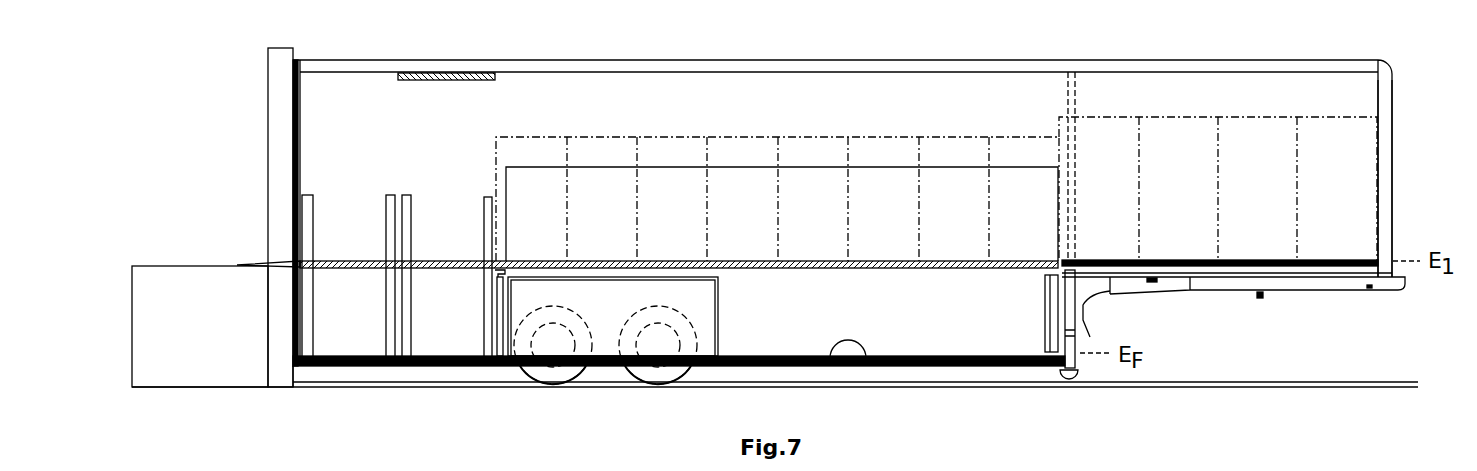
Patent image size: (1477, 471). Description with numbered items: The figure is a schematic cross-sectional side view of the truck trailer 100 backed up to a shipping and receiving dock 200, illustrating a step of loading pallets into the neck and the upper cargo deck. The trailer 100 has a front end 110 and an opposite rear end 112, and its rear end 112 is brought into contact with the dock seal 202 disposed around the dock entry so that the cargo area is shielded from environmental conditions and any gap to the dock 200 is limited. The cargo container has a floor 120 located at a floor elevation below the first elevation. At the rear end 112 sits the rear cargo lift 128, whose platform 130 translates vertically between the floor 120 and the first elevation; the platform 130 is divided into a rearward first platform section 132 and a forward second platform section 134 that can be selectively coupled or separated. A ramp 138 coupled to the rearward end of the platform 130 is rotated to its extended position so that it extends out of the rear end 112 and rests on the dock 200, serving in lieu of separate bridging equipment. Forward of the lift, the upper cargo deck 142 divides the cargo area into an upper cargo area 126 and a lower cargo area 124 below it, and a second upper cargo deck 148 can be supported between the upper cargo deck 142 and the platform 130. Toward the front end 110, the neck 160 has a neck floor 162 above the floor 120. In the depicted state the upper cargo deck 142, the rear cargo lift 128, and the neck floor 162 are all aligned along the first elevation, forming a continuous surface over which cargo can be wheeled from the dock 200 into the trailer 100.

The truck trailer 100 is at (940, 47).
The front end 110 is at (1392, 68).
The rear end 112 is at (296, 60).
The floor 120 is at (875, 367).
The lower cargo area 124 is at (895, 322).
The upper cargo area 126 is at (878, 108).
The rear cargo lift 128 is at (333, 240).
The platform 130 is at (366, 261).
The first platform section 132 is at (358, 261).
The second platform section 134 is at (447, 261).
The ramp 138 is at (238, 264).
The upper cargo deck 142 is at (797, 261).
The second upper cargo deck 148 is at (480, 73).
The neck 160 is at (1292, 272).
The neck floor 162 is at (1338, 261).
The shipping and receiving dock 200 is at (150, 265).
The dock seal 202 is at (283, 82).